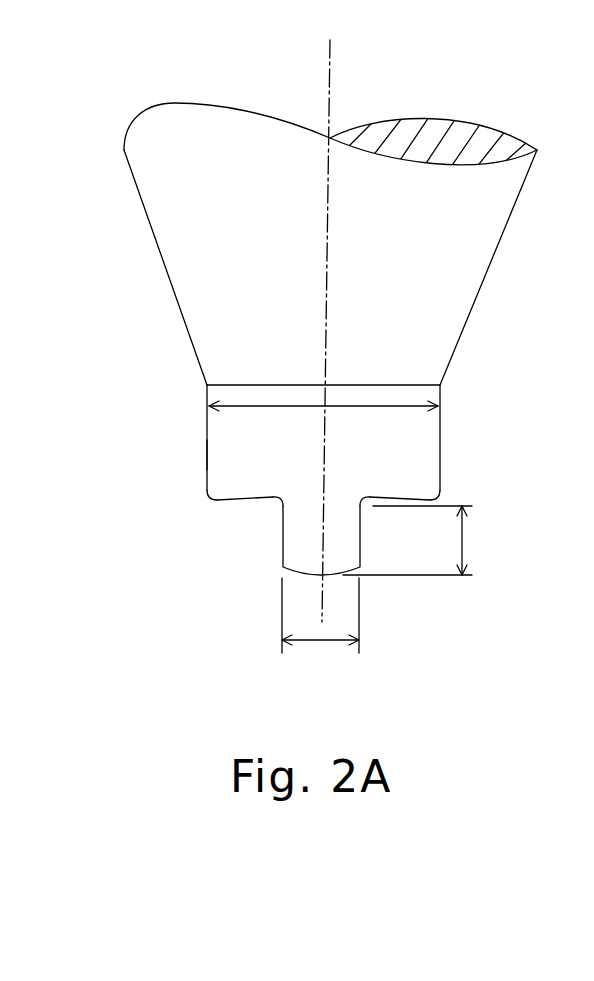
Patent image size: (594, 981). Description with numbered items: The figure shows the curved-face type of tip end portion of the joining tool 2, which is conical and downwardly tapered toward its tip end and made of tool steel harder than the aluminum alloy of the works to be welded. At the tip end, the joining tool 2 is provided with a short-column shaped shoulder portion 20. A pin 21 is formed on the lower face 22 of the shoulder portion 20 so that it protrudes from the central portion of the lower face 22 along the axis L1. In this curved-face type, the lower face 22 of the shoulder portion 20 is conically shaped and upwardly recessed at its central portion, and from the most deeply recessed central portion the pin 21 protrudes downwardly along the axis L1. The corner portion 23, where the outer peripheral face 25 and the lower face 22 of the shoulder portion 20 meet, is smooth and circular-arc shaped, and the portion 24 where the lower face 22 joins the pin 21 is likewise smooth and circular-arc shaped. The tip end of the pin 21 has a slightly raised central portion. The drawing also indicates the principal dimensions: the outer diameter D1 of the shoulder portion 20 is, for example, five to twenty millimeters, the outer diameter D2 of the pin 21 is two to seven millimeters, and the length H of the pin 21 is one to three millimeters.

The joining tool 2 is at (313, 348).
The shoulder portion 20 is at (305, 489).
The pin 21 is at (295, 545).
The lower face 22 is at (238, 505).
The corner portion 23 is at (212, 503).
The portion where the lower face and the pin are connected 24 is at (280, 497).
The outer peripheral face 25 is at (206, 442).
The axis L1 is at (331, 63).
The outer diameter of the shoulder portion D1 is at (276, 408).
The outer diameter of the pin D2 is at (320, 645).
The length of the pin H is at (465, 543).